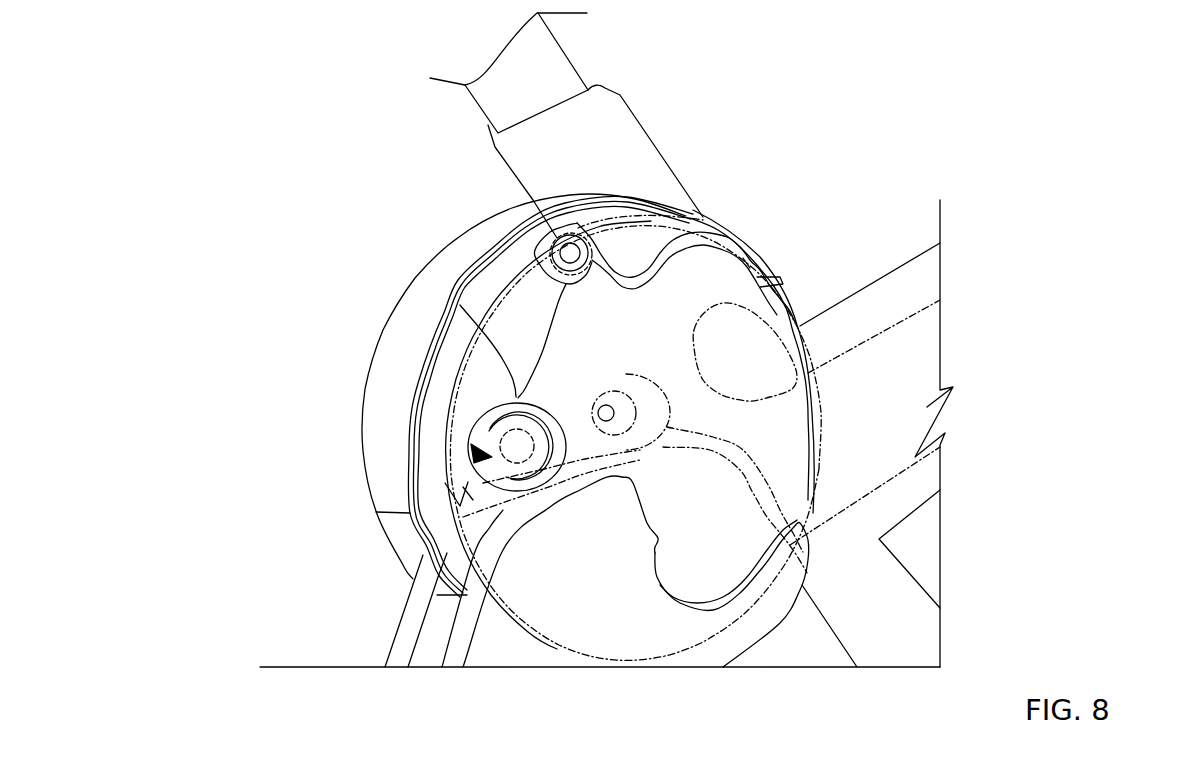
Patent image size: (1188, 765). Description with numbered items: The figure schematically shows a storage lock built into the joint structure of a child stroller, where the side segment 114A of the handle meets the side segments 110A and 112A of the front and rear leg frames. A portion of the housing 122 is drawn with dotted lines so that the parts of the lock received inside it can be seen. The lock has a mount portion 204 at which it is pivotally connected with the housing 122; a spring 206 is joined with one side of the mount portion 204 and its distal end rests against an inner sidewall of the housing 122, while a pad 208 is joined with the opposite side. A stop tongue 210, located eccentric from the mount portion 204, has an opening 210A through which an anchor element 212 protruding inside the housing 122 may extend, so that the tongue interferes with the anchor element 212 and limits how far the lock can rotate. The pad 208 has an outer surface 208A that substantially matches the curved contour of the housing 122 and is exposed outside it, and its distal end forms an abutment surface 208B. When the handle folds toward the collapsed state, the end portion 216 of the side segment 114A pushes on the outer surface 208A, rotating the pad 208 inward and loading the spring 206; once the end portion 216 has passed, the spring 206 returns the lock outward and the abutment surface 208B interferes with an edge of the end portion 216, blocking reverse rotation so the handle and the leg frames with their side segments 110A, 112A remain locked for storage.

The side segment 114A is at (557, 53).
The end portion 216 is at (668, 186).
The mount portion 204 is at (556, 238).
The spring 206 is at (705, 233).
The housing 122 is at (436, 259).
The stop tongue 210 is at (452, 348).
The outer surface 208A is at (455, 318).
The pad 208 is at (487, 387).
The anchor element 212 is at (468, 422).
The opening 210A is at (472, 452).
The abutment surface 208B is at (470, 490).
The side segment 112A is at (490, 645).
The side segment 110A is at (938, 632).